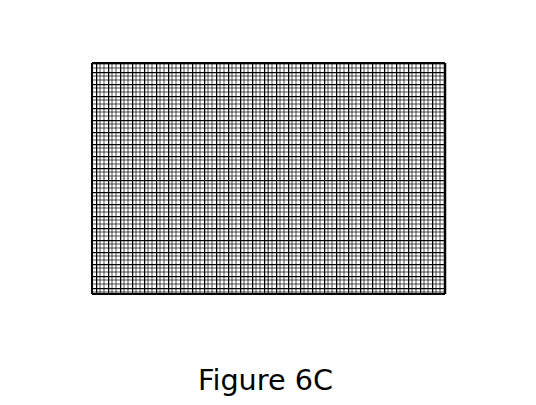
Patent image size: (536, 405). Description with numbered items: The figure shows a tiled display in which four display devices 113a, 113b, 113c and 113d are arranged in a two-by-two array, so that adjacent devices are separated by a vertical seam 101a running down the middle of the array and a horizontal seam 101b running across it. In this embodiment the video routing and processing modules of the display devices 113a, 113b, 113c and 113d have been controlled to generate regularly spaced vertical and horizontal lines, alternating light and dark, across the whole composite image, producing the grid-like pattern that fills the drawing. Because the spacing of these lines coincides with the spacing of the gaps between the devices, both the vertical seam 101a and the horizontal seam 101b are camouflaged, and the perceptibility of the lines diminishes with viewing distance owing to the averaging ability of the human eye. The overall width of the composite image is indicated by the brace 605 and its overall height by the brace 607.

The vertical seam 101a is at (267, 55).
The horizontal seam 101b is at (86, 184).
The display device 113a is at (180, 121).
The display device 113b is at (356, 121).
The display device 113c is at (356, 236).
The display device 113d is at (180, 236).
The width dimension 605 is at (442, 298).
The height dimension 607 is at (452, 63).